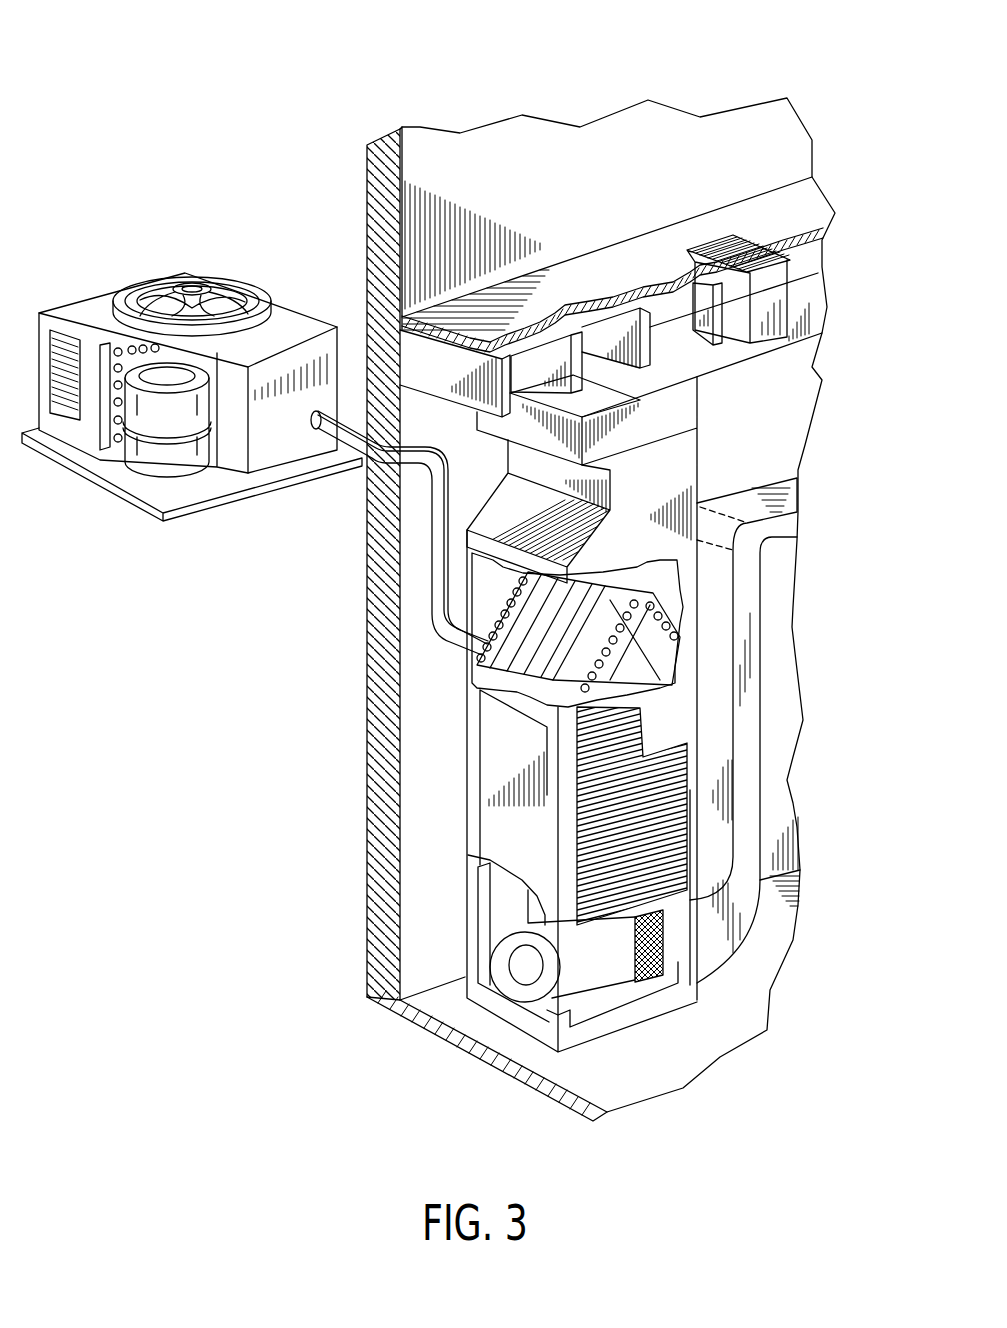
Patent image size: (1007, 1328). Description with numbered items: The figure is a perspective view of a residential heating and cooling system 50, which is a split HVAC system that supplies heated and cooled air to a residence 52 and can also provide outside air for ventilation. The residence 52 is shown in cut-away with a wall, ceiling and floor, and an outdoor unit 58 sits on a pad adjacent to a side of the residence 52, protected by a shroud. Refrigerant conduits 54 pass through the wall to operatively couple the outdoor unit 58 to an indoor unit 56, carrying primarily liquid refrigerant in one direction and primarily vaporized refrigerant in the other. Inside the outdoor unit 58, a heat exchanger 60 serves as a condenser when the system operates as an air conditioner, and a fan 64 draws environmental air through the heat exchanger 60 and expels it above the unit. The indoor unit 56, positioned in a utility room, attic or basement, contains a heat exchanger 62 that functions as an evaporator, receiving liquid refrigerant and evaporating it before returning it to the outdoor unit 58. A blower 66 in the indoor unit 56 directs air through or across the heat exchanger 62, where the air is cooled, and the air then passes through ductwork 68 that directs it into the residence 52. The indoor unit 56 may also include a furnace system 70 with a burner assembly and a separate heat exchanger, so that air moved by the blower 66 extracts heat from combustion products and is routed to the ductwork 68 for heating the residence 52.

The residential heating and cooling system 50 is at (188, 96).
The residence 52 is at (507, 148).
The refrigerant conduits 54 is at (432, 540).
The indoor unit 56 is at (445, 795).
The outdoor unit 58 is at (148, 268).
The heat exchanger 60 is at (122, 353).
The heat exchanger 62 is at (530, 662).
The fan 64 is at (208, 287).
The blower 66 is at (518, 990).
The ductwork 68 is at (745, 383).
The furnace system 70 is at (478, 740).